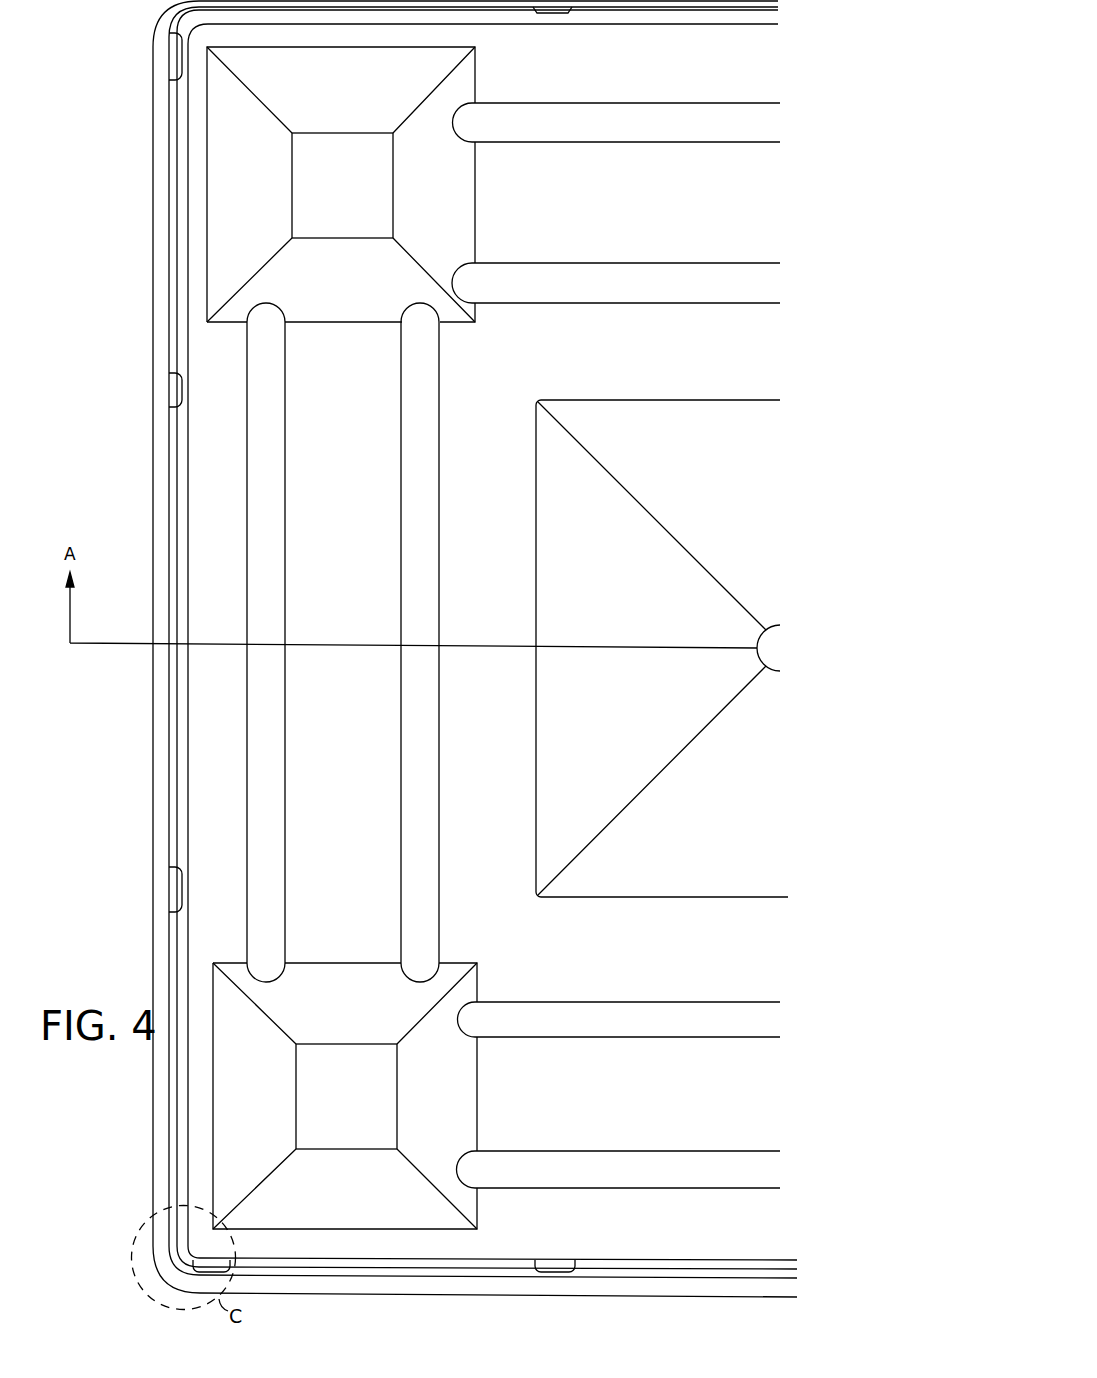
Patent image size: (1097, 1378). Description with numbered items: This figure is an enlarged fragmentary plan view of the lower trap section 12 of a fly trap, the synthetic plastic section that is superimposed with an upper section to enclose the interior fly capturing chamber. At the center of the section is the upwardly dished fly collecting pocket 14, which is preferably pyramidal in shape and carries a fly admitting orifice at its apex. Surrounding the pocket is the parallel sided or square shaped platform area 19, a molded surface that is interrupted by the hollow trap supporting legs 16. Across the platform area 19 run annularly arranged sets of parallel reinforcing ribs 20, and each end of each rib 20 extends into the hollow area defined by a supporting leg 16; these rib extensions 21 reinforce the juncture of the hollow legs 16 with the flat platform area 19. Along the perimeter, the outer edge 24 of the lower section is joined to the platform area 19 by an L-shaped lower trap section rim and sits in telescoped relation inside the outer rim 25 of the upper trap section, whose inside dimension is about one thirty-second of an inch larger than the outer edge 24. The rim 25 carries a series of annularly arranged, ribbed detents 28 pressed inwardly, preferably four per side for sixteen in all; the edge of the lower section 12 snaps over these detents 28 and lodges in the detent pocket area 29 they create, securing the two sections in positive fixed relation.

The lower trap section 12 is at (355, 1295).
The fly collecting pocket 14 is at (597, 716).
The trap supporting legs 16 is at (437, 214).
The platform area 19 is at (512, 384).
The reinforcing ribs 20 is at (410, 548).
The rib extensions 21 is at (413, 313).
The outer edge 24 is at (175, 781).
The outer rim 25 is at (160, 514).
The detents 28 is at (169, 80).
The detent pocket area 29 is at (172, 752).